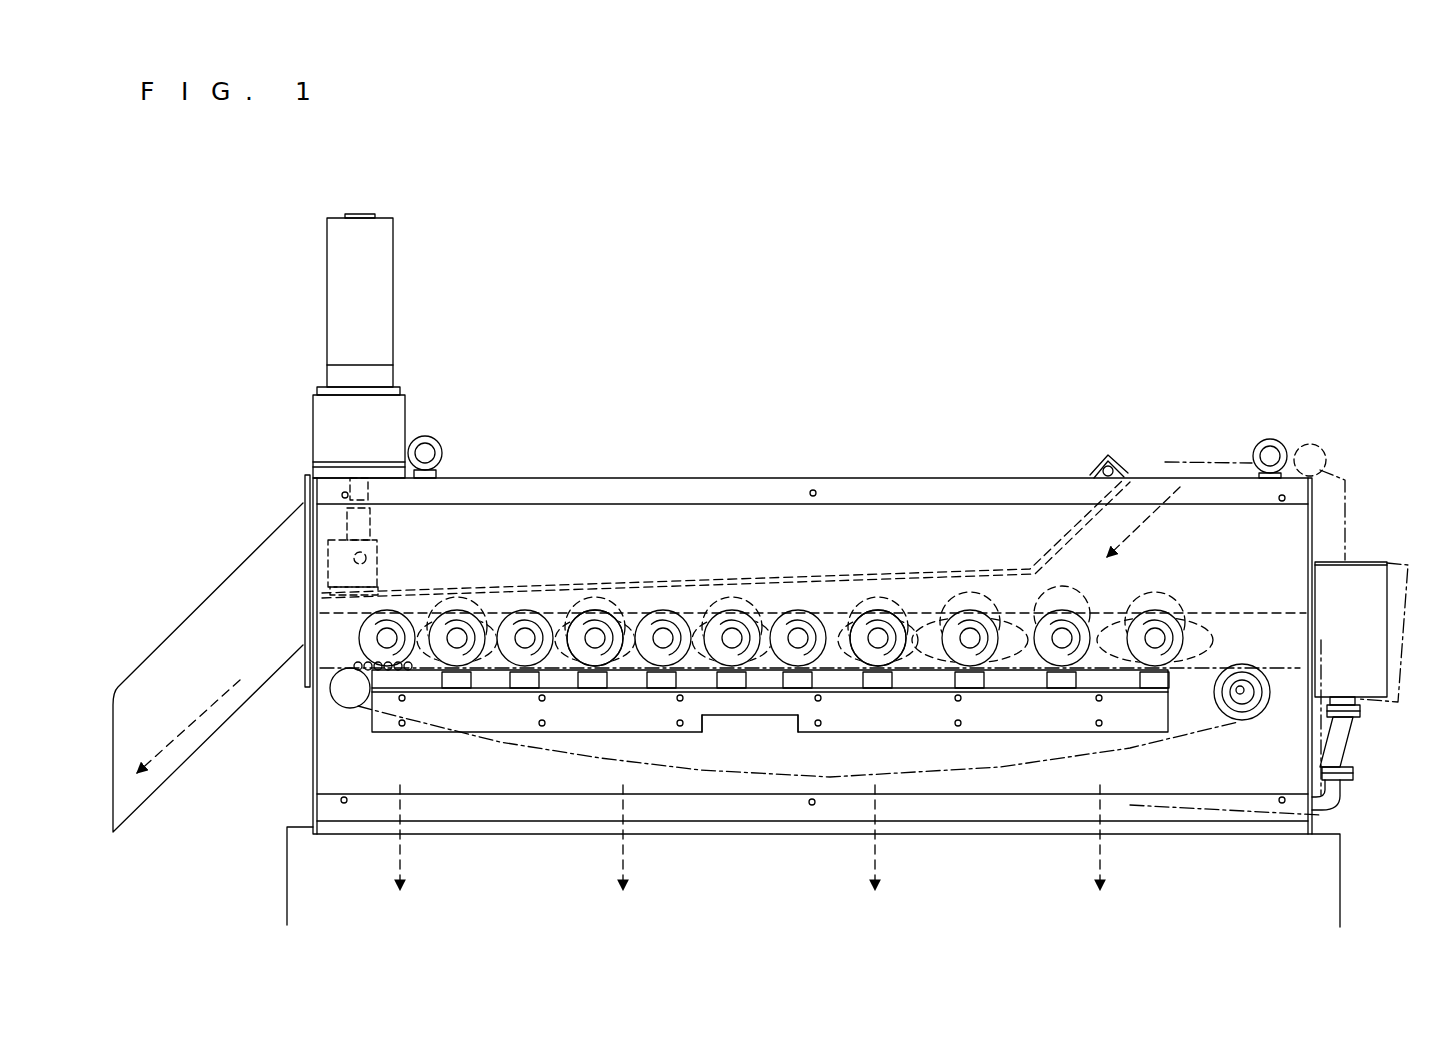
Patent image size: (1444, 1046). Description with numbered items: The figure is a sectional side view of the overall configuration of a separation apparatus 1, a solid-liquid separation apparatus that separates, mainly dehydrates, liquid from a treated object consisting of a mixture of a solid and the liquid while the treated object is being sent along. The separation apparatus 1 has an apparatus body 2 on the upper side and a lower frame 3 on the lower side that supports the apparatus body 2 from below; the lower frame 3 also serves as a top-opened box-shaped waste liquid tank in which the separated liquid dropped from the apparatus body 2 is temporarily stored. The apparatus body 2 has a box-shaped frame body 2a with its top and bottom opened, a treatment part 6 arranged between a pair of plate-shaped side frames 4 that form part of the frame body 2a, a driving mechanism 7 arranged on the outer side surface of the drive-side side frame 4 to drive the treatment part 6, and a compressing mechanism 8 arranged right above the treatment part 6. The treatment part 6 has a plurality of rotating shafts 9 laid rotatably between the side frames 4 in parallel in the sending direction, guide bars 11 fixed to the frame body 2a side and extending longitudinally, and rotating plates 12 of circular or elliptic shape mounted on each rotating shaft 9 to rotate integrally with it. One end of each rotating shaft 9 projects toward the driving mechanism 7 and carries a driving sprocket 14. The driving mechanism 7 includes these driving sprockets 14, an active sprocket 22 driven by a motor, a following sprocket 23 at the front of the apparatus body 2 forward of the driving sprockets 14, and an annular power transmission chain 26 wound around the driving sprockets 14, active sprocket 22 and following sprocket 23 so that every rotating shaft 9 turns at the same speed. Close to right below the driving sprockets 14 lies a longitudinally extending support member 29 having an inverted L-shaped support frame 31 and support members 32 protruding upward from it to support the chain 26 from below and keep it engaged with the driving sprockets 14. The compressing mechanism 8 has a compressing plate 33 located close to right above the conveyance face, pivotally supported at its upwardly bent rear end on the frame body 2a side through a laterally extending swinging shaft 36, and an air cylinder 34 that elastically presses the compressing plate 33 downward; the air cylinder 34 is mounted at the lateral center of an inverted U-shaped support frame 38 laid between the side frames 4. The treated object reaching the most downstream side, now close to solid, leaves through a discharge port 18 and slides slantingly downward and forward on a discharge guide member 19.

The separation apparatus 1 is at (735, 450).
The apparatus body 2 is at (1323, 498).
The frame body 2a is at (1315, 540).
The lower frame 3 is at (287, 882).
The side frame 4 is at (1133, 504).
The treatment part 6 is at (1183, 597).
The driving mechanism 7 is at (1262, 738).
The compressing mechanism 8 is at (298, 403).
The rotating shaft 9 is at (877, 636).
The guide bar 11 is at (1215, 605).
The rotating plate 12 is at (610, 605).
The driving sprocket 14 is at (595, 638).
The discharge port 18 is at (345, 530).
The discharge guide member 19 is at (240, 565).
The active sprocket 22 is at (1268, 700).
The following sprocket 23 is at (335, 690).
The power transmission chain 26 is at (1000, 770).
The support member 29 is at (493, 736).
The support frame 31 is at (720, 718).
The support member 32 is at (773, 705).
The compressing plate 33 is at (945, 570).
The air cylinder 34 is at (393, 298).
The swinging shaft 36 is at (1097, 470).
The support frame 38 is at (405, 420).